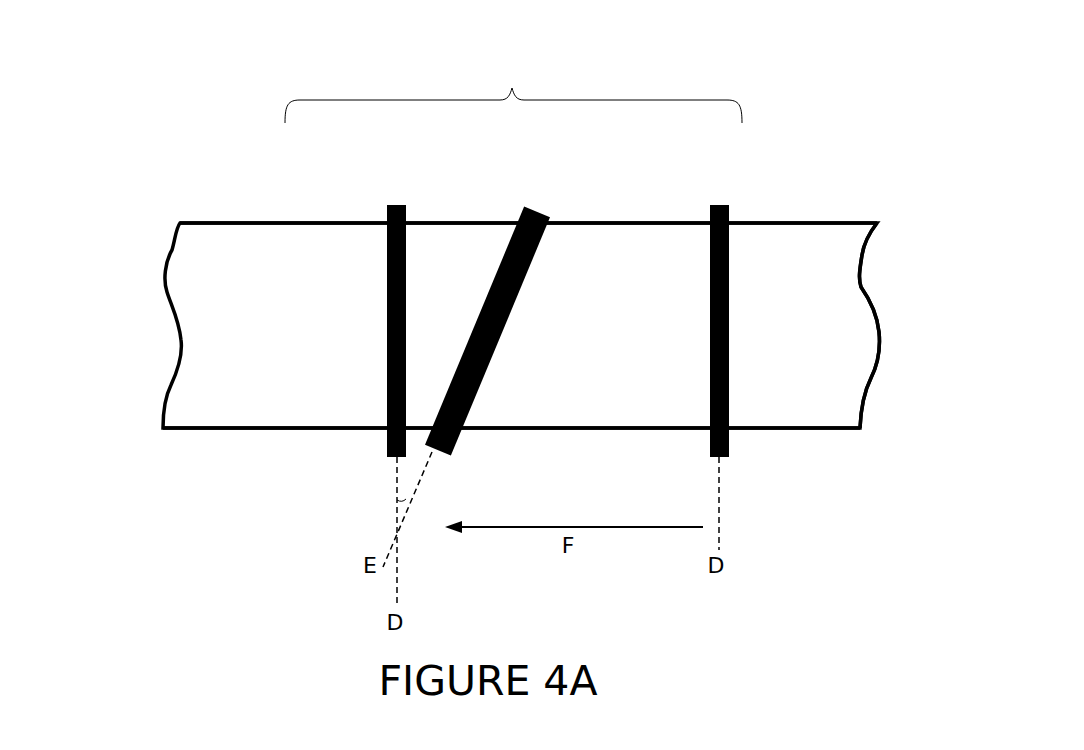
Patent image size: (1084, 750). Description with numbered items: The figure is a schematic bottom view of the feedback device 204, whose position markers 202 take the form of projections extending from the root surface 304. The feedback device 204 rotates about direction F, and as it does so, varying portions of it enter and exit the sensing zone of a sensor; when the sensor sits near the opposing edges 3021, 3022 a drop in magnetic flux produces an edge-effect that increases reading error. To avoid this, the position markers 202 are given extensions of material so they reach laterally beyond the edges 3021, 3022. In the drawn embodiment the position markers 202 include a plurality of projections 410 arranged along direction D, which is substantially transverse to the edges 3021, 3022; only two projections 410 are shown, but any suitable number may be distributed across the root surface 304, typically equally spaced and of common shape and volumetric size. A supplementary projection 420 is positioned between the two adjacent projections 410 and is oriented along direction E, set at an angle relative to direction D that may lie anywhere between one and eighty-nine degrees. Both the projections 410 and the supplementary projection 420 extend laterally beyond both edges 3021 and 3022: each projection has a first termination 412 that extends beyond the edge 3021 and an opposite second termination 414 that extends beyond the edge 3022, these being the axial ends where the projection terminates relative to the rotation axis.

The position markers 202 is at (513, 90).
The feedback device 204 is at (118, 327).
The edge 3021 is at (212, 210).
The edge 3022 is at (212, 444).
The root surface 304 is at (830, 285).
The projections 410 is at (388, 269).
The first termination 412 is at (403, 203).
The second termination 414 is at (387, 441).
The supplementary projection 420 is at (500, 270).